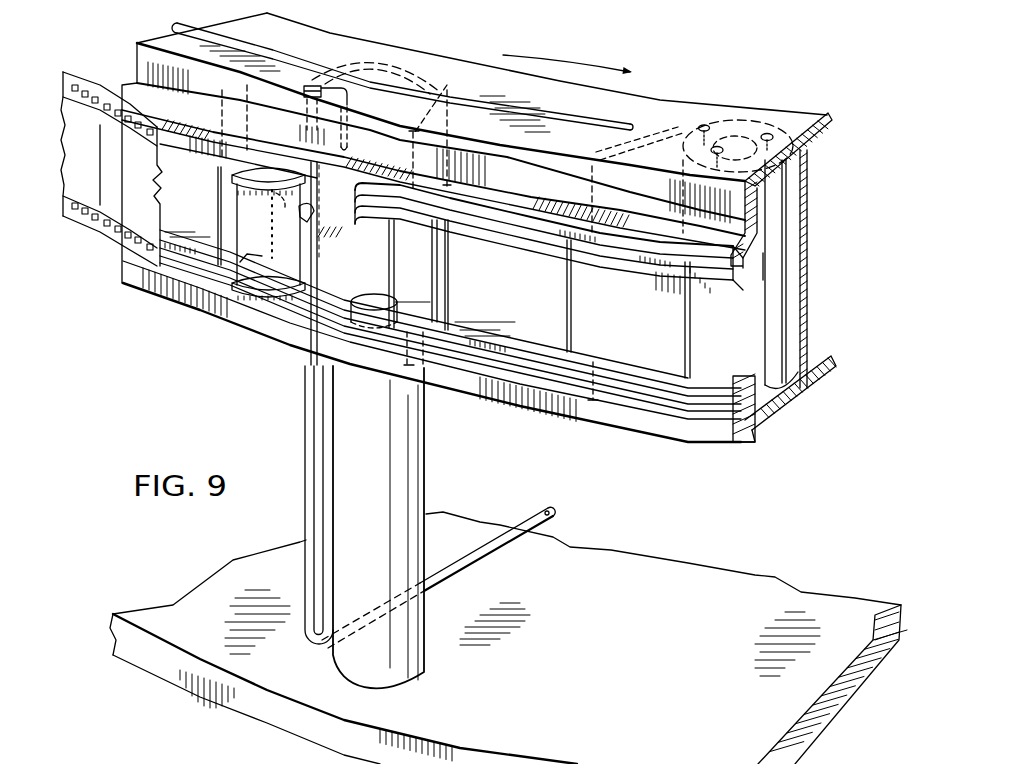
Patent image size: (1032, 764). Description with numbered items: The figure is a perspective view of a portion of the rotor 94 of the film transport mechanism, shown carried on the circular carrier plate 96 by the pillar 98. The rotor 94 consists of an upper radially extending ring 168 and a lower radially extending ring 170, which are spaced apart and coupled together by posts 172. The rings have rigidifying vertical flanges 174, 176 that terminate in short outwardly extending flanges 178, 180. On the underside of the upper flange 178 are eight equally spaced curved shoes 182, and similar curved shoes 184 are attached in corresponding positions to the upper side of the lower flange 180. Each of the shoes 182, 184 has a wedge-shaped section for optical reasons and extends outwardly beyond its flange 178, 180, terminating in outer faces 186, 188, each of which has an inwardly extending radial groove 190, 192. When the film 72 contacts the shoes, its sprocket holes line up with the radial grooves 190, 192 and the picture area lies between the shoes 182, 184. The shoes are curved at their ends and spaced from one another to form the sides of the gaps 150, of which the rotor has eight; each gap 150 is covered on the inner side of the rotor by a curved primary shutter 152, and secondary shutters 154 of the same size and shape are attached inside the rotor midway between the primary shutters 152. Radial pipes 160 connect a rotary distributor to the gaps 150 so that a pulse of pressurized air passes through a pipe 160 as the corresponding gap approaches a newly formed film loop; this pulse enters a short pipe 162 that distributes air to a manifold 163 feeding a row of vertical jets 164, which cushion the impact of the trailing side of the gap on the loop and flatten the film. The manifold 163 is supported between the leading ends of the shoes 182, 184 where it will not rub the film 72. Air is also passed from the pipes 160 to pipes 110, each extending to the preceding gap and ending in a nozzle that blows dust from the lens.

The film 72 is at (87, 82).
The rotor 94 is at (672, 95).
The carrier plate 96 is at (677, 670).
The pillar 98 is at (426, 453).
The pipe 110 is at (318, 84).
The gap 150 is at (347, 280).
The primary shutter 152 is at (447, 85).
The secondary shutter 154 is at (766, 123).
The radial pipe 160 is at (497, 548).
The short pipe 162 is at (314, 213).
The manifold 163 is at (247, 254).
The vertical jets 164 is at (281, 281).
The upper ring 168 is at (357, 42).
The lower ring 170 is at (177, 295).
The posts 172 is at (808, 247).
The vertical flange 174 is at (760, 207).
The vertical flange 176 is at (748, 436).
The upper flange 178 is at (653, 222).
The lower flange 180 is at (716, 402).
The curved shoe 182 is at (172, 150).
The curved shoe 184 is at (188, 240).
The outer face 186 is at (651, 266).
The outer face 188 is at (646, 382).
The radial groove 190 is at (740, 262).
The radial groove 192 is at (770, 420).